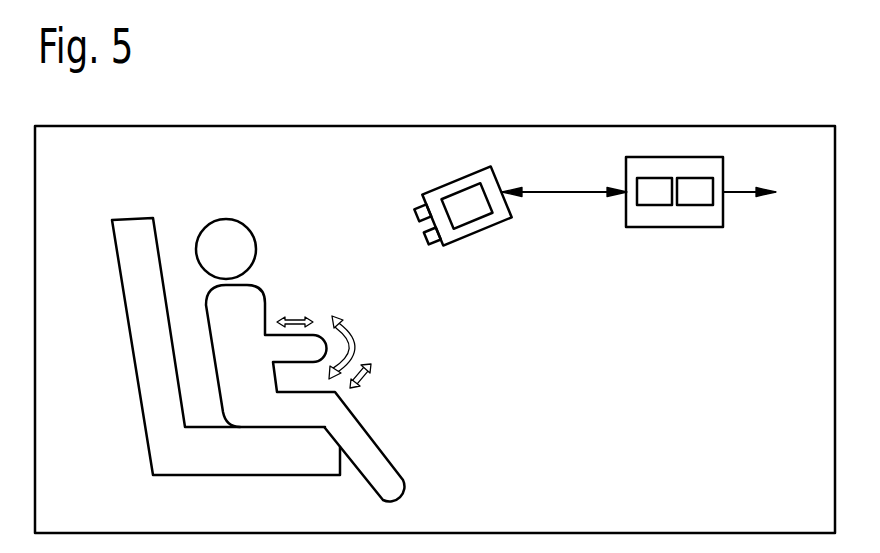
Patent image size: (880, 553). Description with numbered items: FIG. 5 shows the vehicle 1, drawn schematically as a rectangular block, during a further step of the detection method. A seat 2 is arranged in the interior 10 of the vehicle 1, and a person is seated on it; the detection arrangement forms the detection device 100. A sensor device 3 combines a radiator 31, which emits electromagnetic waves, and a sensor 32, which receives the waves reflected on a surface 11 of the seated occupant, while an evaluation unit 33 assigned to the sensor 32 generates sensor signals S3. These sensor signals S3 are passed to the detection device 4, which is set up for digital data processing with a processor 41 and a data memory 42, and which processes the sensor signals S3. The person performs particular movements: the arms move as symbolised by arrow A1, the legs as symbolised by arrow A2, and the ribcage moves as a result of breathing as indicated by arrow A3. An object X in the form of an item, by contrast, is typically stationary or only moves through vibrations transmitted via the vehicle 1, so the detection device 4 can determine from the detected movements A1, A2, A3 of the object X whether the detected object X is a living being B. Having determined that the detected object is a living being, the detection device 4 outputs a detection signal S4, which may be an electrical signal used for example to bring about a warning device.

The vehicle 1 is at (433, 126).
The interior 10 is at (702, 486).
The seat 2 is at (143, 421).
The surface 11 is at (130, 218).
The sensor device 3 is at (461, 223).
The radiator 31 is at (422, 212).
The sensor 32 is at (432, 235).
The evaluation unit 33 is at (466, 206).
The detection device 4 is at (703, 213).
The processor 41 is at (652, 206).
The output unit 42 is at (697, 206).
The detection device 100 is at (572, 370).
The sensor signals S3 is at (590, 197).
The detection signal S4 is at (743, 197).
The arrow A1 is at (338, 320).
The arrow A2 is at (371, 363).
The arrow A3 is at (295, 316).
The living being B is at (287, 209).
The object X is at (393, 404).